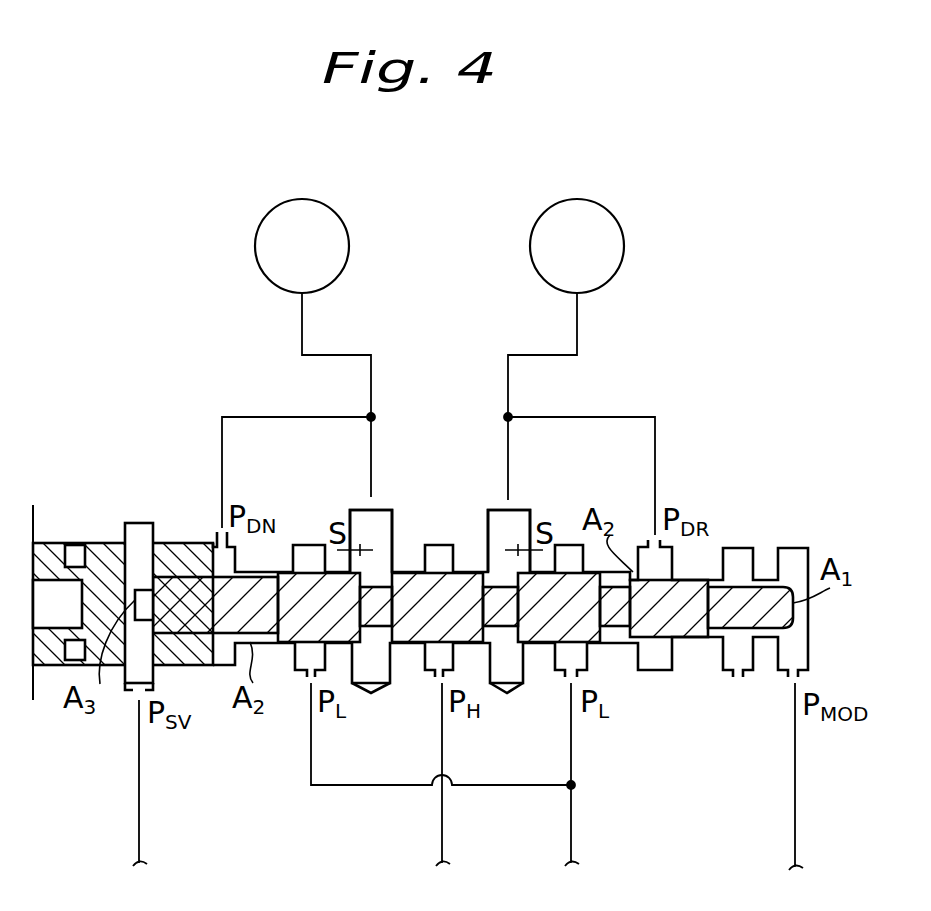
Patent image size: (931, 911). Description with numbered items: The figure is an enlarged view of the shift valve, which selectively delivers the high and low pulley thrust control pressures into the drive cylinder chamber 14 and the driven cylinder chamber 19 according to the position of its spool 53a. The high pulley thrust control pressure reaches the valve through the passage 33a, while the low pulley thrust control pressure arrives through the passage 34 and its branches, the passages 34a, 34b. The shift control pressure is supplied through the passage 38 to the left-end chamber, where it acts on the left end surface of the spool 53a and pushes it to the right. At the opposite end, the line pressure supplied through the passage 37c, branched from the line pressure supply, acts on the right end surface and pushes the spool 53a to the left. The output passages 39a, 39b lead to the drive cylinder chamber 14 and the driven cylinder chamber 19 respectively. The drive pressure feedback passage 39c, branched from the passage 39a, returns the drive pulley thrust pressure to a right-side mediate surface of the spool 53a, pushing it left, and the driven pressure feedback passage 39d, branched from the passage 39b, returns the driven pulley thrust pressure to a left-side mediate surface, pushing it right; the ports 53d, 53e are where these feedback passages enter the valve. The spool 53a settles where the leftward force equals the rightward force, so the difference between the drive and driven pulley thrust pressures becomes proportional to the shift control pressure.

The drive cylinder chamber 14 is at (595, 268).
The driven cylinder chamber 19 is at (320, 268).
The passage 33a is at (443, 808).
The passage 34 is at (571, 842).
The passage 34a is at (309, 730).
The passage 34b is at (572, 747).
The passage 37c is at (795, 757).
The passage 38 is at (139, 795).
The passage 39a is at (577, 320).
The passage 39b is at (302, 310).
The drive pressure feedback passage 39c is at (655, 449).
The driven pressure feedback passage 39d is at (222, 441).
The spool 53a is at (692, 647).
The pilot chamber port 53d is at (495, 530).
The pilot chamber port 53e is at (377, 525).